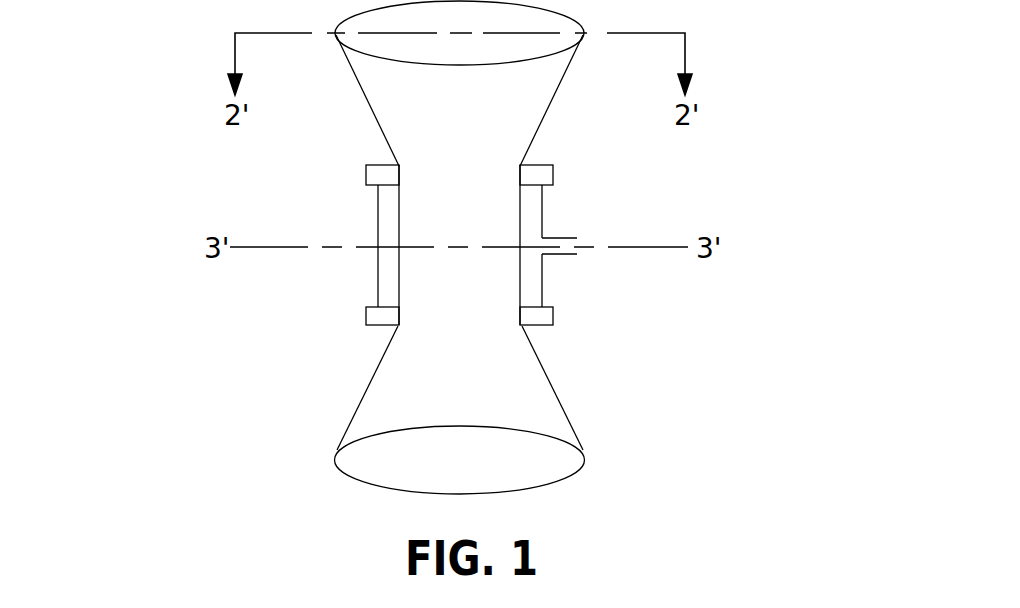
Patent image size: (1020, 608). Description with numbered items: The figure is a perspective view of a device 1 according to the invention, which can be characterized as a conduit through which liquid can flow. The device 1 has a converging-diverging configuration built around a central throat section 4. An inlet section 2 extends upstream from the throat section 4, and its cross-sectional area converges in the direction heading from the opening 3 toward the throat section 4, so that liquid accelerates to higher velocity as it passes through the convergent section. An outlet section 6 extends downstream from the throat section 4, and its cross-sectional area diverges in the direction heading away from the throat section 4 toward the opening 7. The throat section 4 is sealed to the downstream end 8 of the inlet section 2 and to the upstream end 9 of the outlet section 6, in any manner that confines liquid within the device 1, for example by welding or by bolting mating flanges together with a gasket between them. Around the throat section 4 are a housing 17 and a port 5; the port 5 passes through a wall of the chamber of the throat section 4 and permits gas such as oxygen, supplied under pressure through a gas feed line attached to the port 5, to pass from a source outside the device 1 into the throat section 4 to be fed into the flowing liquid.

The device 1 is at (590, 74).
The inlet section 2 is at (358, 90).
The opening 3 is at (471, 61).
The throat section 4 is at (378, 232).
The port 5 is at (577, 248).
The outlet section 6 is at (548, 377).
The opening 7 is at (469, 474).
The downstream end 8 is at (523, 166).
The upstream end 9 is at (382, 326).
The housing 17 is at (542, 217).